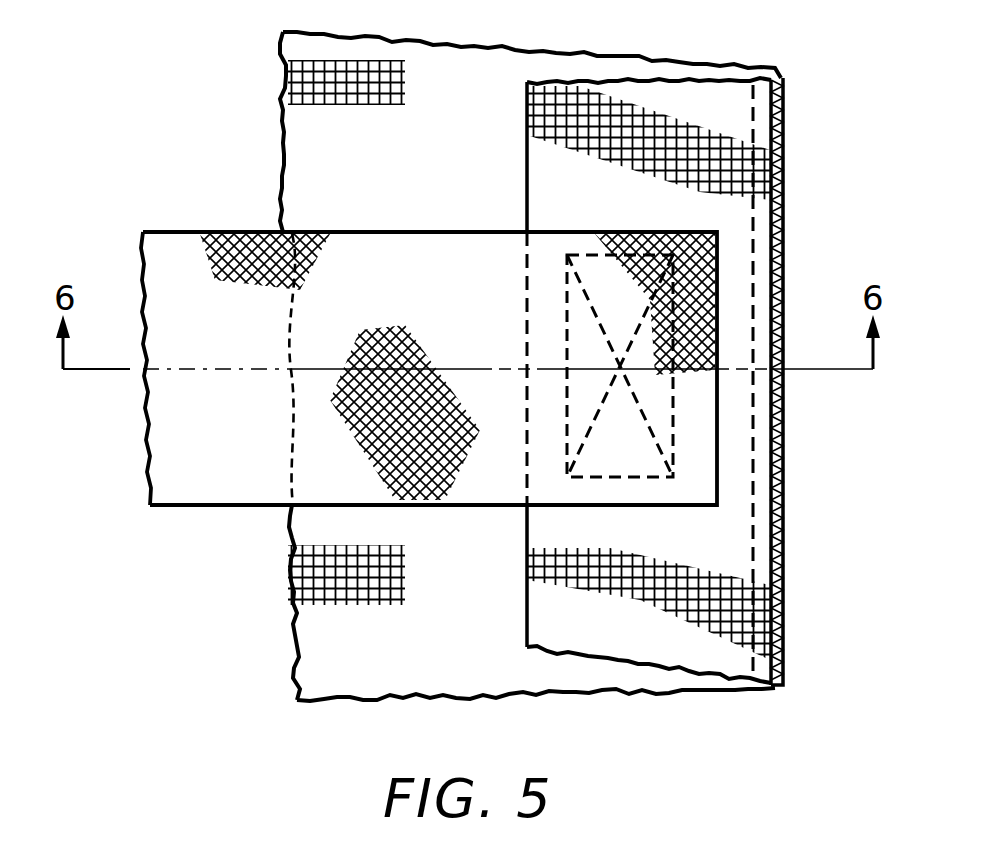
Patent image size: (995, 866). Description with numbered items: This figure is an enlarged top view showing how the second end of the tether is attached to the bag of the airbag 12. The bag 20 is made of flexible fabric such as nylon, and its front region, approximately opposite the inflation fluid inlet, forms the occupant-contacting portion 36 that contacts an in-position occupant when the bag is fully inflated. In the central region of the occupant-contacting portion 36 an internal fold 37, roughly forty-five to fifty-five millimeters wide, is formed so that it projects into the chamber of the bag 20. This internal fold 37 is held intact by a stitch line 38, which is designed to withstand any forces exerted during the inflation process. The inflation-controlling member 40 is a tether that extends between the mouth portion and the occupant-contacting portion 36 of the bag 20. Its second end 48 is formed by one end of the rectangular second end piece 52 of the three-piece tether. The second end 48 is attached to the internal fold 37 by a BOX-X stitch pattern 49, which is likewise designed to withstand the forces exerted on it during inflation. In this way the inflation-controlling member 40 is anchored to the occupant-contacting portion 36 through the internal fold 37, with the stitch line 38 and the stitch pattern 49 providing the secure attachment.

The airbag 12 is at (272, 76).
The bag 20 is at (600, 34).
The internal fold 37 is at (680, 98).
The stitch line 38 is at (772, 215).
The occupant-contacting portion 36 is at (783, 447).
The inflation-controlling member 40 is at (181, 512).
The second end piece 52 is at (274, 456).
The BOX-X stitch pattern 49 is at (564, 312).
The second end 48 is at (692, 437).